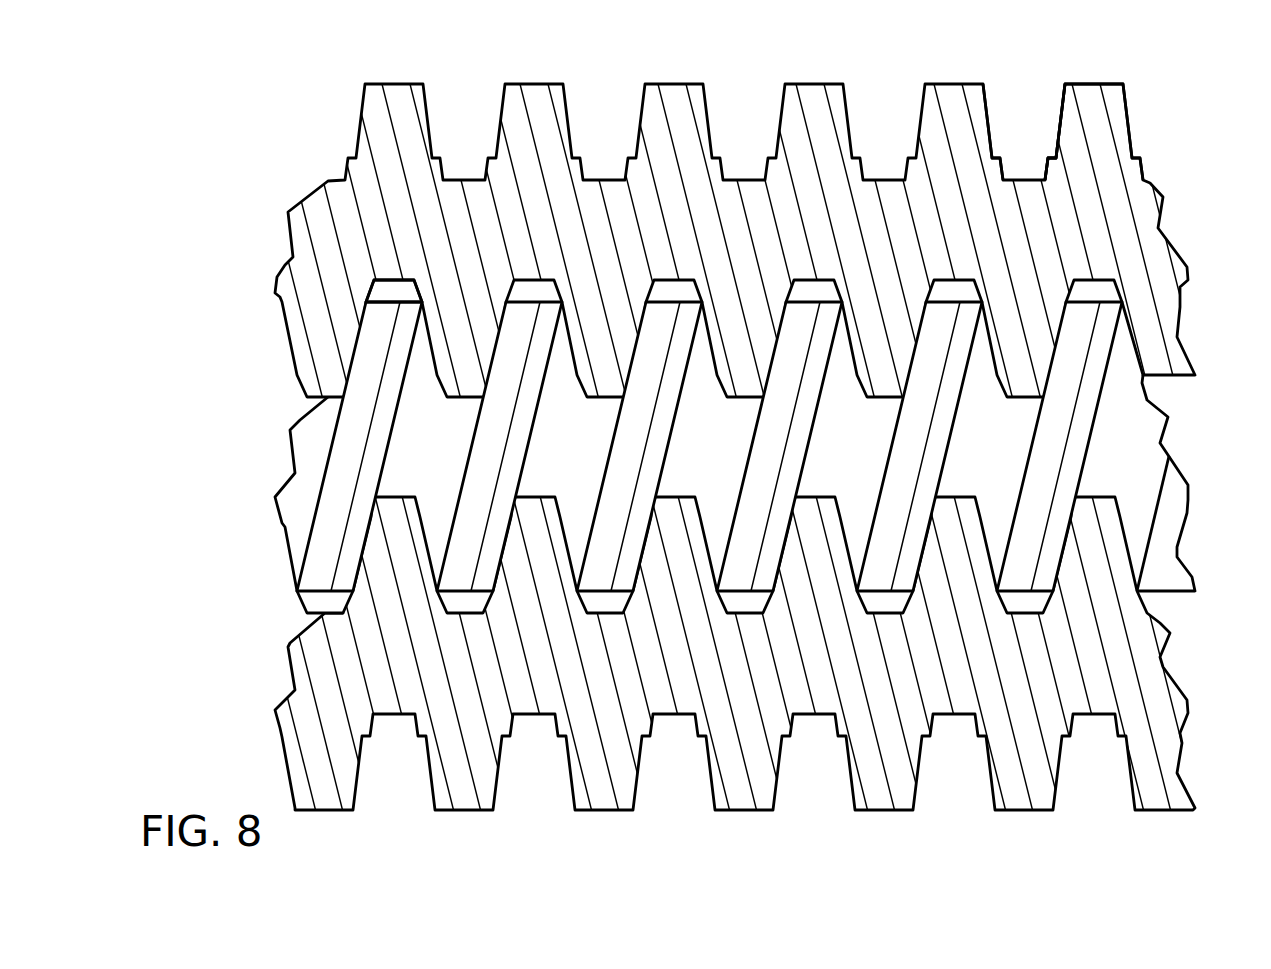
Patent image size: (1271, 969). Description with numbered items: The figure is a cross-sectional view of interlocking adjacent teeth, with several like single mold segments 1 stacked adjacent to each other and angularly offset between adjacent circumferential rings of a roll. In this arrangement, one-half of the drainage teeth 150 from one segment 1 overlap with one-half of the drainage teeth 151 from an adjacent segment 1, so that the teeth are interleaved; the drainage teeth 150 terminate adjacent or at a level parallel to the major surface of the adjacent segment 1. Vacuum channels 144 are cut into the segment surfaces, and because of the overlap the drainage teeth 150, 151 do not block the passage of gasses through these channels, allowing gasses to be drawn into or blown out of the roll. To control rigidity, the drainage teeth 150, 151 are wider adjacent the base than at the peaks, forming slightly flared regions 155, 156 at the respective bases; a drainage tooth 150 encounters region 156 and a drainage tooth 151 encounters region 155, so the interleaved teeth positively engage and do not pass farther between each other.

The single mold segment 1 is at (688, 426).
The vacuum channels 144 is at (386, 282).
The drainage teeth 150 is at (284, 364).
The drainage teeth 151 is at (1115, 106).
The region 155 is at (368, 301).
The region 156 is at (997, 157).